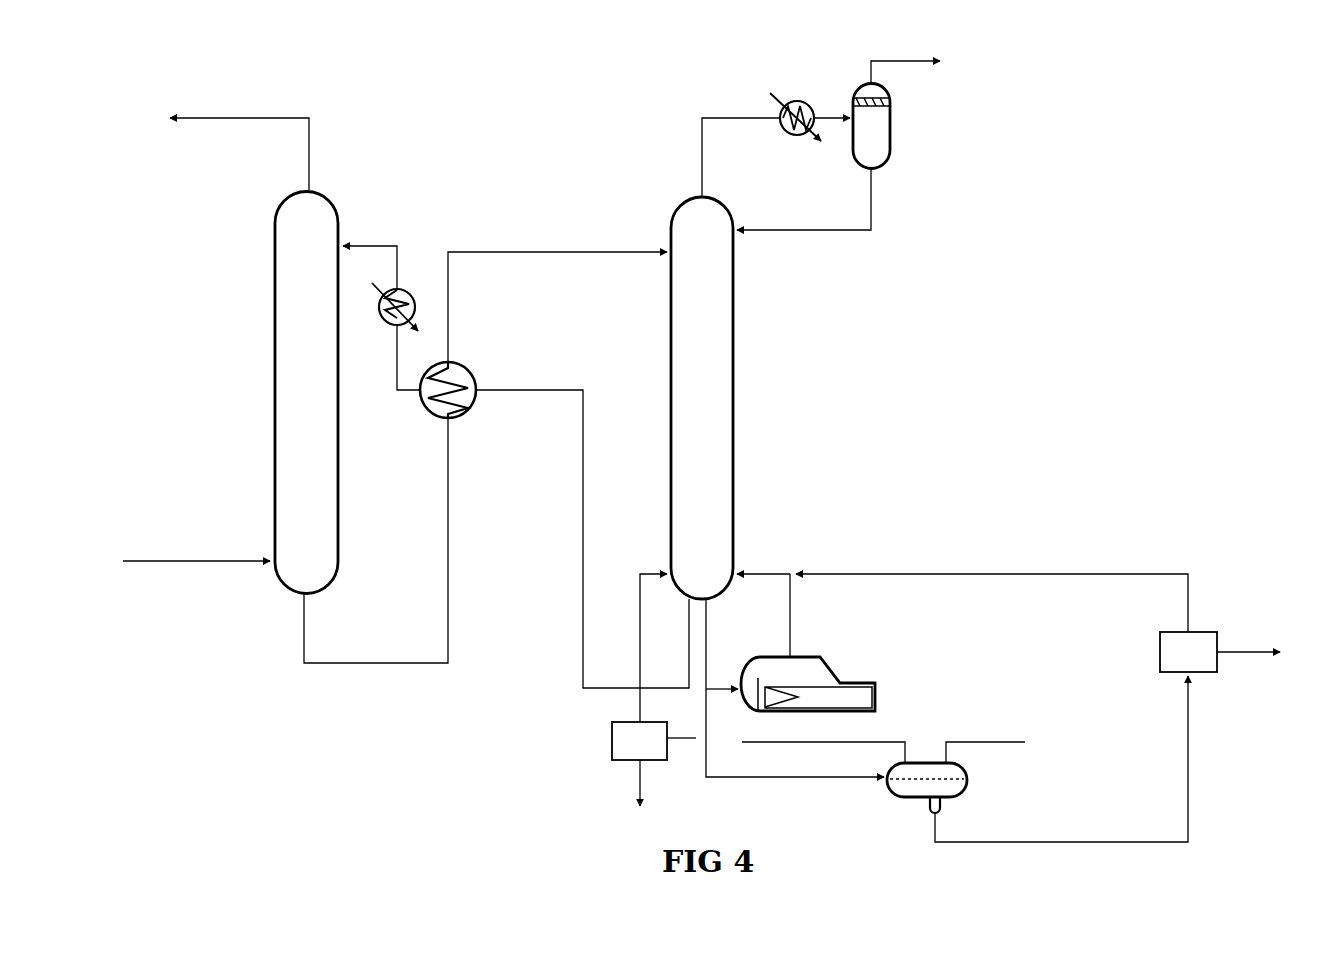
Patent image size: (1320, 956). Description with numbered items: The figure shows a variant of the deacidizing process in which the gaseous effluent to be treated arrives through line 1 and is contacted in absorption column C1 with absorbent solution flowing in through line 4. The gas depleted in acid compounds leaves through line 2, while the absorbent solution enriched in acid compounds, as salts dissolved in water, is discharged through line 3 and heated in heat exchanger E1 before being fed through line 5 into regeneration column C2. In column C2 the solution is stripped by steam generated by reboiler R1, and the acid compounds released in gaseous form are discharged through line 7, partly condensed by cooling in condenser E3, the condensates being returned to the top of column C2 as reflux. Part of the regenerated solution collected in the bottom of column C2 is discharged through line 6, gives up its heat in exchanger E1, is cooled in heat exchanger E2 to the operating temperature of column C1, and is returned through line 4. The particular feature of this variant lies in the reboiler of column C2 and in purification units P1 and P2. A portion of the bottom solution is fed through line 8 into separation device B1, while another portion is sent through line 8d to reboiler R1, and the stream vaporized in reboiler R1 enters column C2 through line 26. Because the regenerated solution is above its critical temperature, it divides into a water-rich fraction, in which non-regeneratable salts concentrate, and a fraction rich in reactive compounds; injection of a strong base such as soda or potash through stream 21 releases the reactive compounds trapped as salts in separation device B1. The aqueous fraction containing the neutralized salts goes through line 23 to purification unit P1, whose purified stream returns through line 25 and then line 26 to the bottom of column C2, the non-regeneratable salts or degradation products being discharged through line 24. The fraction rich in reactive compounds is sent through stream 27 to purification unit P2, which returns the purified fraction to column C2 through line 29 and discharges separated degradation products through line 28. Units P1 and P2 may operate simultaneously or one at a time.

The line 1 is at (185, 559).
The line 2 is at (212, 117).
The line 3 is at (378, 660).
The line 4 is at (373, 240).
The line 5 is at (610, 248).
The line 6 is at (622, 685).
The line 7 is at (735, 118).
The line 8 is at (818, 780).
The line 8d is at (722, 692).
The stream 21 is at (1000, 745).
The line 23 is at (1117, 840).
The line 24 is at (1245, 655).
The line 25 is at (1050, 575).
The line 26 is at (765, 568).
The stream 27 is at (683, 742).
The line 28 is at (640, 785).
The line 29 is at (643, 568).
The absorption column C1 is at (338, 448).
The regeneration column C2 is at (671, 327).
The heat exchanger E1 is at (476, 368).
The heat exchanger E2 is at (413, 292).
The condenser E3 is at (803, 100).
The reboiler R1 is at (808, 658).
The separation device B1 is at (925, 763).
The purification unit P1 is at (1188, 652).
The purification unit P2 is at (639, 741).